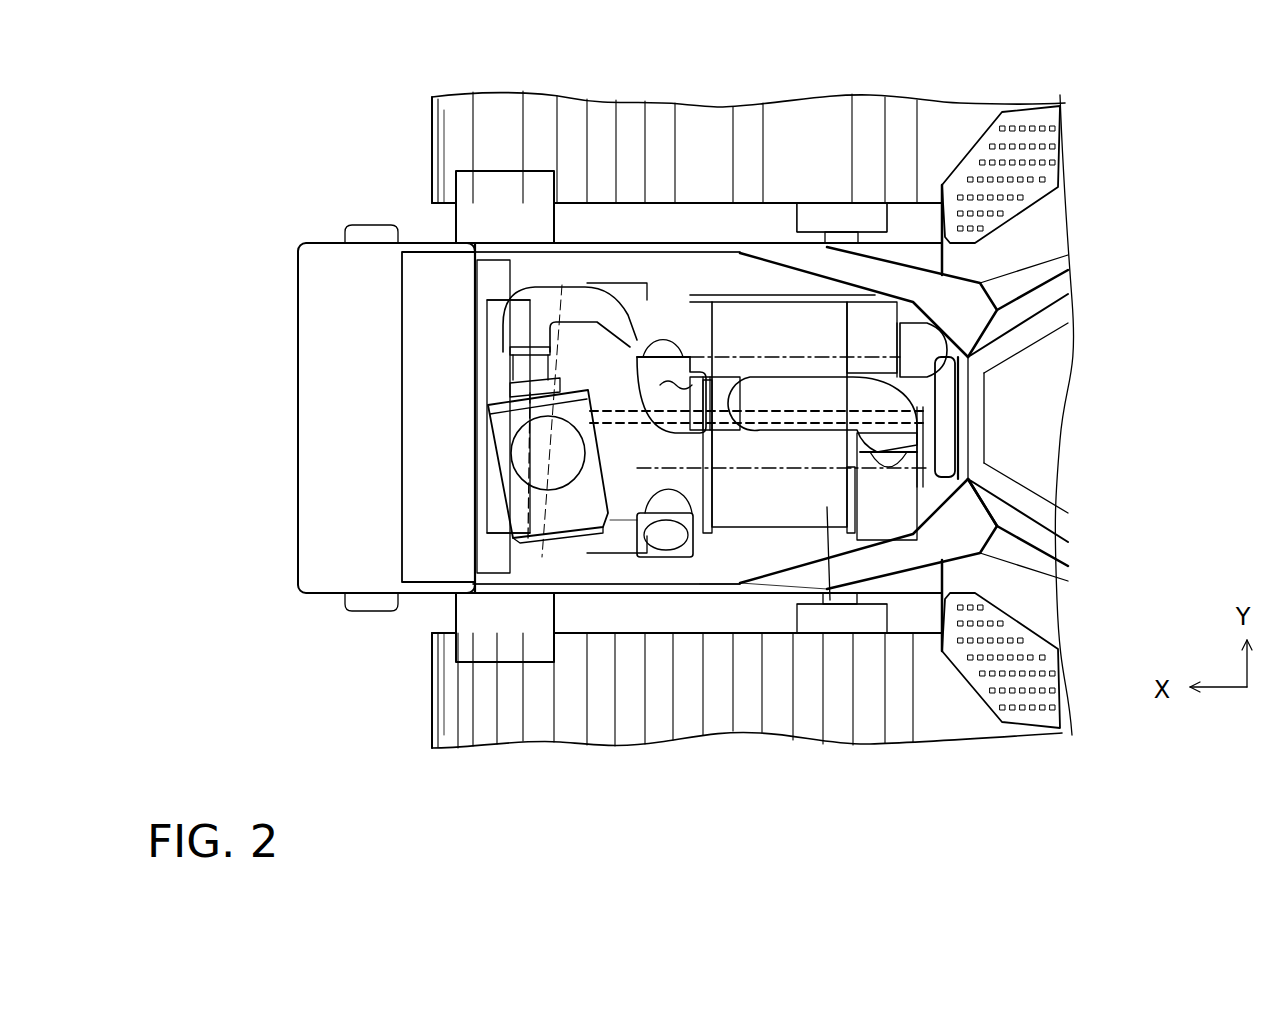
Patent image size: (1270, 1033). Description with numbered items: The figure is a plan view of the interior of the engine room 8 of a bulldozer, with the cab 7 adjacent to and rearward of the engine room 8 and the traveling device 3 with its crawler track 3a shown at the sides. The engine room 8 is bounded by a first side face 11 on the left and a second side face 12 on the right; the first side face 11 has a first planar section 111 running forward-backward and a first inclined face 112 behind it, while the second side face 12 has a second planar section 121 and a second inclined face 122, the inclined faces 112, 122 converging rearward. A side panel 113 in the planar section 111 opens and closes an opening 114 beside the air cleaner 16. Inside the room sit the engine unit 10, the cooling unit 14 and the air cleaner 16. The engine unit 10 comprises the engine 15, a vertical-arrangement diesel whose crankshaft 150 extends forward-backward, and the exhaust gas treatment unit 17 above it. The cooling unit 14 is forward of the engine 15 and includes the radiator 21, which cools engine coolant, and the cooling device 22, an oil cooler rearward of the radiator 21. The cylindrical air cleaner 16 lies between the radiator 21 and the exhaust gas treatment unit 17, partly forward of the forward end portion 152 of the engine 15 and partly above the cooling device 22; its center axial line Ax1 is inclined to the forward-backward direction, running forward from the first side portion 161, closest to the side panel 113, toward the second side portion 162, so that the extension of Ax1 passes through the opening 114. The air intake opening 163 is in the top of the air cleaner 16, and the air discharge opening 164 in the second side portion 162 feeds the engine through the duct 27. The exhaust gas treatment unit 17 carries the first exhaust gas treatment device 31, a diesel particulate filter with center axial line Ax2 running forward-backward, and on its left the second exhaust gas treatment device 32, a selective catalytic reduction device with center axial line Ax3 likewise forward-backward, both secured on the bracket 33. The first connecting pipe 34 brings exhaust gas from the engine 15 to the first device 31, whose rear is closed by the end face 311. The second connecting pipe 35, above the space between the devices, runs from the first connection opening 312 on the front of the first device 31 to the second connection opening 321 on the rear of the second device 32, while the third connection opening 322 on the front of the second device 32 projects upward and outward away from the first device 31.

The traveling device 3 is at (418, 163).
The crawler track 3a is at (446, 128).
The cab 7 is at (1055, 418).
The engine room 8 is at (322, 305).
The engine unit 10 is at (607, 270).
The first side face 11 is at (693, 605).
The second side face 12 is at (704, 228).
The cooling unit 14 is at (370, 478).
The engine 15 is at (620, 530).
The air cleaner 16 is at (550, 577).
The exhaust gas treatment unit 17 is at (784, 505).
The radiator 21 is at (432, 430).
The cooling device 22 is at (493, 518).
The duct 27 is at (543, 293).
The first exhaust gas treatment device 31 is at (766, 378).
The second exhaust gas treatment device 32 is at (883, 560).
The bracket 33 is at (863, 358).
The first connecting pipe 34 is at (948, 345).
The second connecting pipe 35 is at (893, 318).
The first planar section 111 is at (597, 583).
The first inclined face 112 is at (946, 560).
The side panel 113 is at (713, 603).
The opening 114 is at (727, 587).
The second planar section 121 is at (660, 343).
The second inclined face 122 is at (868, 267).
The crankshaft 150 is at (800, 410).
The forward end portion 152 is at (562, 285).
The first side portion 161 is at (530, 577).
The second side portion 162 is at (498, 392).
The air intake opening 163 is at (528, 455).
The air discharge opening 164 is at (518, 338).
The end face 311 is at (980, 283).
The first connection opening 312 is at (690, 330).
The second connection opening 321 is at (985, 503).
The third connection opening 322 is at (650, 557).
The center axial line of the air cleaner Ax1 is at (572, 545).
The center axial line of the first exhaust gas treatment device Ax2 is at (880, 278).
The center axial line of the second exhaust gas treatment device Ax3 is at (850, 468).